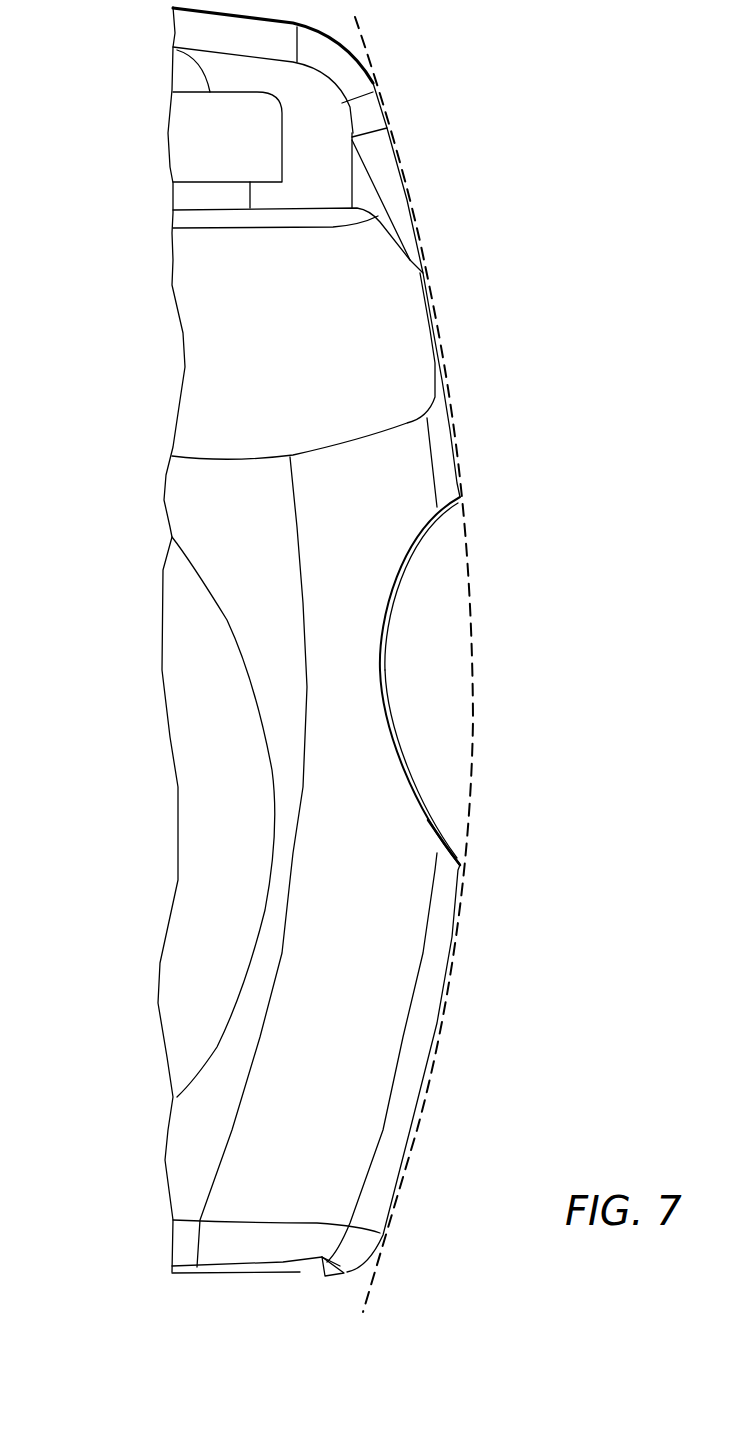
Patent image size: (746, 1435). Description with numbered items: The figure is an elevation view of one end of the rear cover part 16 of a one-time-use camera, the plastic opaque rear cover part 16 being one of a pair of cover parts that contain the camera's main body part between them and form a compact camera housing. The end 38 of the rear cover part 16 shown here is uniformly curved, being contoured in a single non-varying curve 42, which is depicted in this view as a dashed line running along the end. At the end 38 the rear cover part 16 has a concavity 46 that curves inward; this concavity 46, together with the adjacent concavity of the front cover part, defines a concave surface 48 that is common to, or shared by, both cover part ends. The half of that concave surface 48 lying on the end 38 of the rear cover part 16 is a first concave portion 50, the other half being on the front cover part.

The rear cover part 16 is at (158, 1093).
The end 38 is at (397, 1143).
The non-varying curve 42 is at (397, 1207).
The concavity 46 is at (405, 787).
The concave surface 48 is at (390, 733).
The first concave portion 50 is at (423, 820).